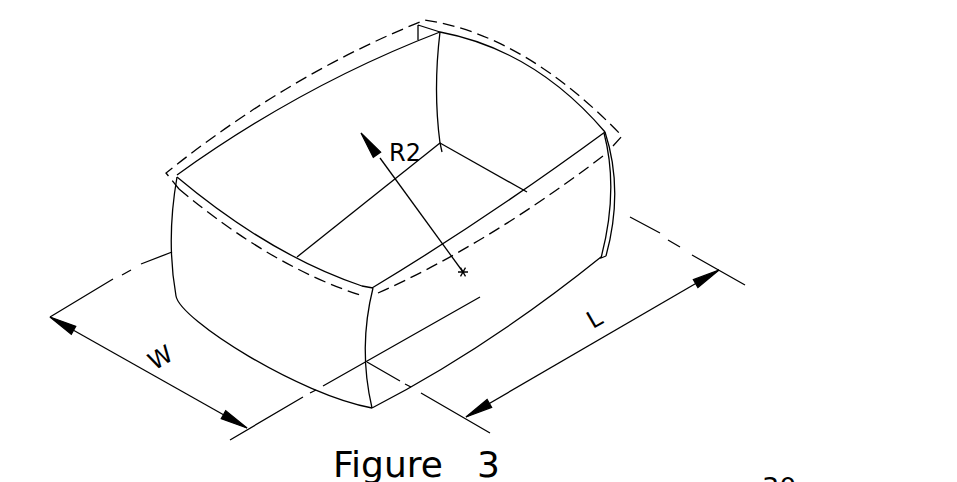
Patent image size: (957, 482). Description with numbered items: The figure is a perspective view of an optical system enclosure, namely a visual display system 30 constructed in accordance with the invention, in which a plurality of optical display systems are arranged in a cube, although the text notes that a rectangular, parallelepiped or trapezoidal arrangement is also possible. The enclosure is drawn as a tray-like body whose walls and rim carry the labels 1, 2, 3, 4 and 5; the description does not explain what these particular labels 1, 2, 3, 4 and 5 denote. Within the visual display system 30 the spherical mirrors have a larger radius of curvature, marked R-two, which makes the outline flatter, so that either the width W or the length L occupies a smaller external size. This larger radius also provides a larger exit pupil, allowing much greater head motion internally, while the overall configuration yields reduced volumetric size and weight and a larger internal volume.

The front side wall 1 is at (367, 362).
The right side wall 2 is at (325, 148).
The rear side wall 3 is at (309, 144).
The left side wall 4 is at (511, 108).
The peripheral rim flange 5 is at (394, 104).
The visual display system 30 is at (622, 72).